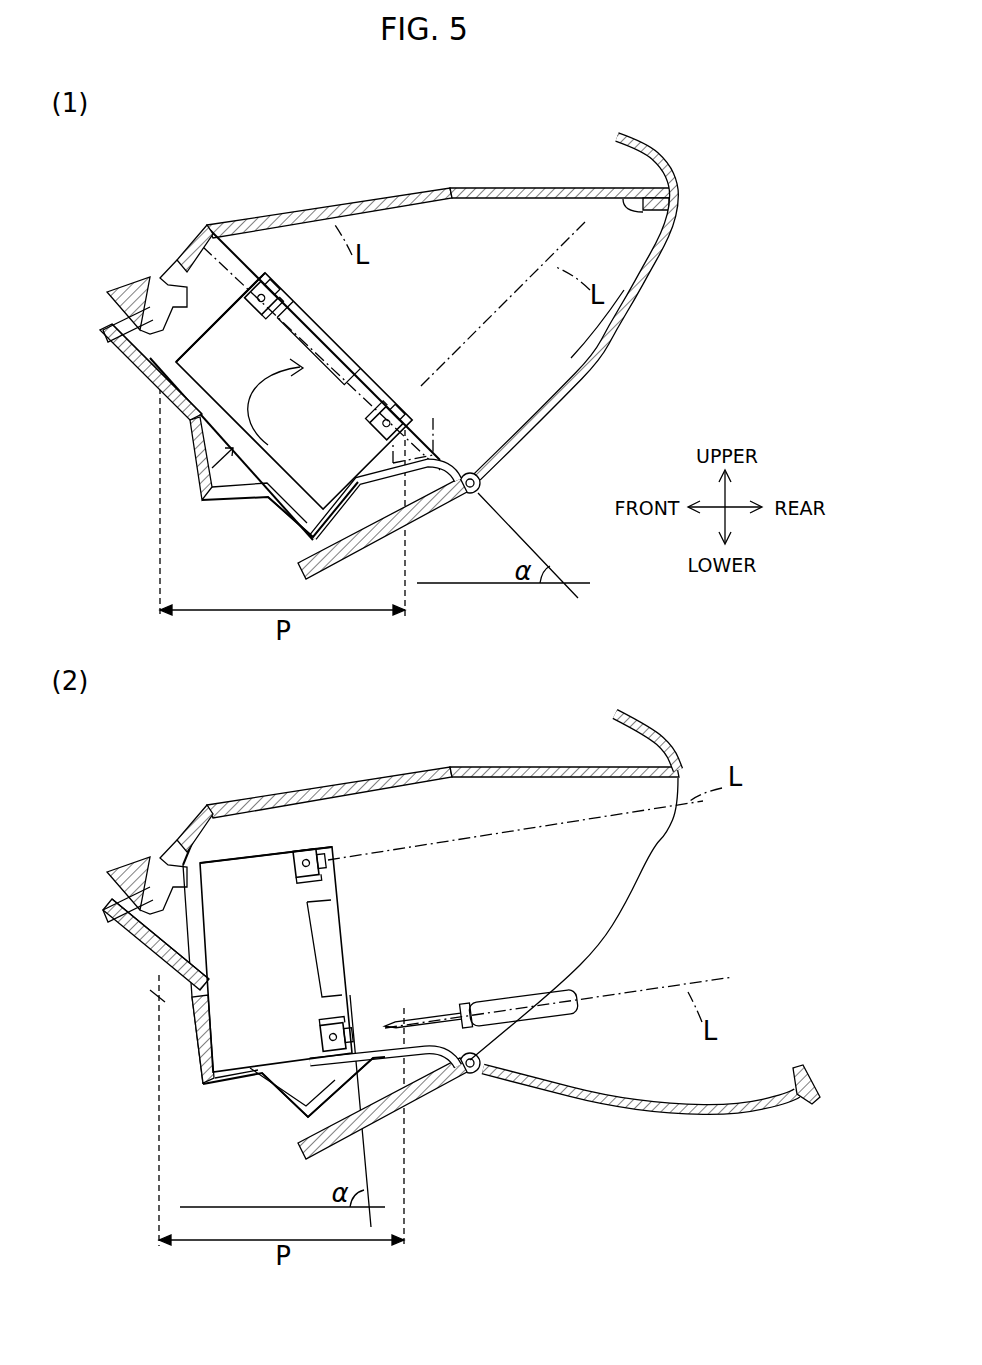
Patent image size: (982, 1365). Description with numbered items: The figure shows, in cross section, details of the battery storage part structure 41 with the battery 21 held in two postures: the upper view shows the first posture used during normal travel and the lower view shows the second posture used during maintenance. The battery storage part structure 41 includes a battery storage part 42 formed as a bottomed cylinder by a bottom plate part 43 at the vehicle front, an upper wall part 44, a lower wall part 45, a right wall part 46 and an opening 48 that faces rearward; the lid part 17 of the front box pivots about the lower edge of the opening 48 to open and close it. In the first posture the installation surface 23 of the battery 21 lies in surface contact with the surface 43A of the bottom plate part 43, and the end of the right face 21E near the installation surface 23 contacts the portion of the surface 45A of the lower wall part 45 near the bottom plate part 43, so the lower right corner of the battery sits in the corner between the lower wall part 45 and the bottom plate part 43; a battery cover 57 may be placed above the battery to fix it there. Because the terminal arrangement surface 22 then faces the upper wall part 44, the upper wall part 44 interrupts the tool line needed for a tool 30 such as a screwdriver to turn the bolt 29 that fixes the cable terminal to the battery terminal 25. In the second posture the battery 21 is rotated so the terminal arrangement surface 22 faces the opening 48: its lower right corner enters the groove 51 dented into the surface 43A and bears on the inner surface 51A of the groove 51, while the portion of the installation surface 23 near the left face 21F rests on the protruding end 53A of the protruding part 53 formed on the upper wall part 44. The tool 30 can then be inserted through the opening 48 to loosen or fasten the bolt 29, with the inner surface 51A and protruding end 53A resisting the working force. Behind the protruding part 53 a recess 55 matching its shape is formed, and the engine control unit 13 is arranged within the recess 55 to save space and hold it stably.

The engine control unit 13 is at (140, 282).
The lid part 17 is at (640, 283).
The battery 21 is at (205, 480).
The right face 21E is at (376, 478).
The left face 21F is at (221, 313).
The terminal arrangement surface 22 is at (327, 333).
The installation surface 23 is at (199, 442).
The battery terminal 25 is at (262, 290).
The bolt 29 is at (280, 300).
The tool 30 is at (578, 1010).
The battery storage part structure 41 is at (598, 124).
The battery storage part 42 is at (474, 184).
The bottom plate part 43 is at (132, 363).
The surface of the bottom plate part 43A is at (150, 368).
The upper wall part 44 is at (375, 205).
The lower wall part 45 is at (325, 555).
The surface of the lower wall part 45A is at (290, 527).
The right wall part 46 is at (580, 335).
The opening 48 is at (647, 214).
The groove 51 is at (212, 500).
The inner surface of the groove 51A is at (195, 1022).
The protruding part 53 is at (170, 262).
The protruding end 53A is at (185, 300).
The recess 55 is at (110, 300).
The battery cover 57 is at (375, 368).